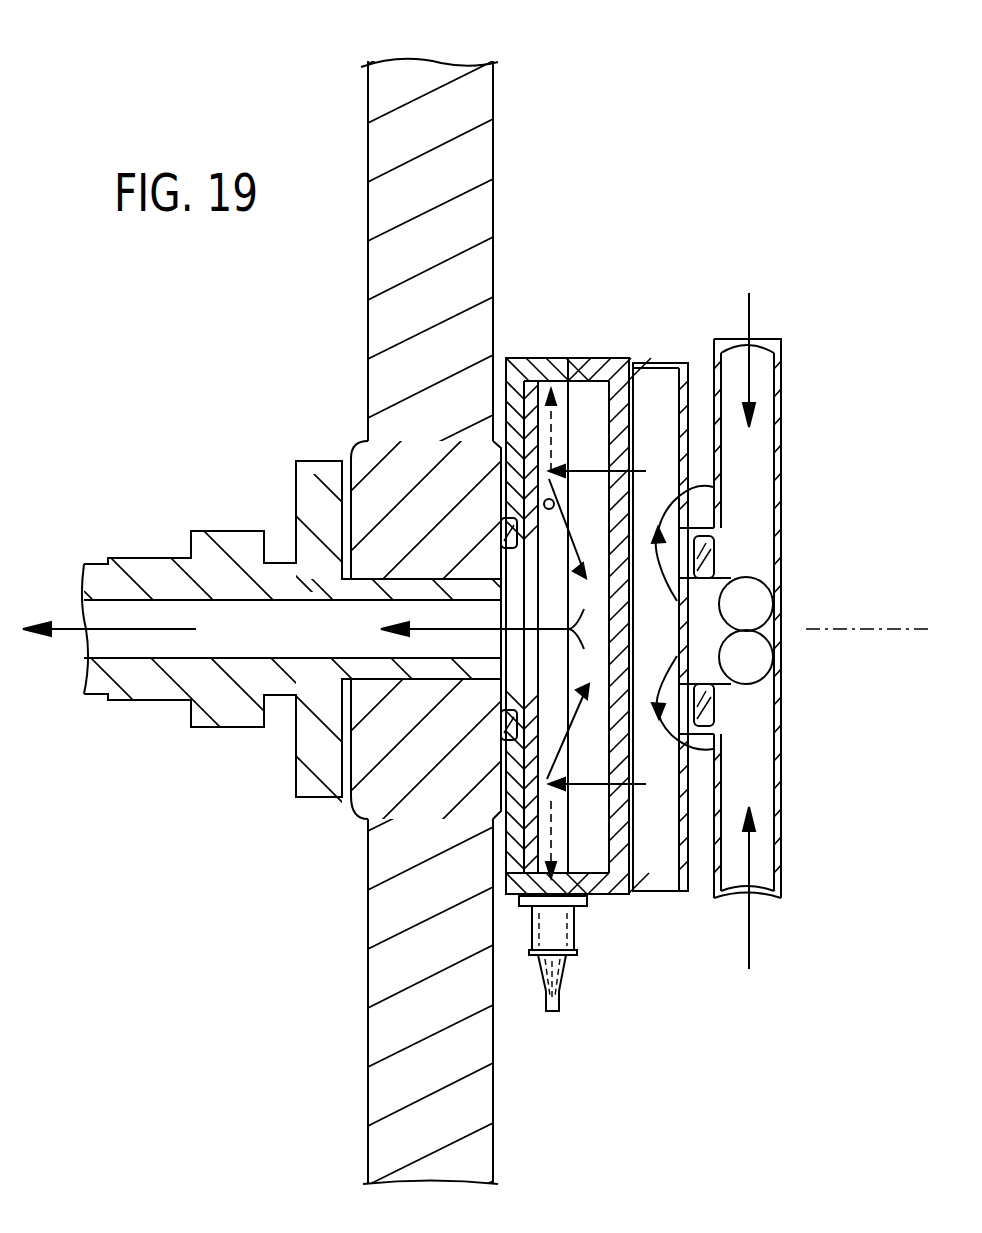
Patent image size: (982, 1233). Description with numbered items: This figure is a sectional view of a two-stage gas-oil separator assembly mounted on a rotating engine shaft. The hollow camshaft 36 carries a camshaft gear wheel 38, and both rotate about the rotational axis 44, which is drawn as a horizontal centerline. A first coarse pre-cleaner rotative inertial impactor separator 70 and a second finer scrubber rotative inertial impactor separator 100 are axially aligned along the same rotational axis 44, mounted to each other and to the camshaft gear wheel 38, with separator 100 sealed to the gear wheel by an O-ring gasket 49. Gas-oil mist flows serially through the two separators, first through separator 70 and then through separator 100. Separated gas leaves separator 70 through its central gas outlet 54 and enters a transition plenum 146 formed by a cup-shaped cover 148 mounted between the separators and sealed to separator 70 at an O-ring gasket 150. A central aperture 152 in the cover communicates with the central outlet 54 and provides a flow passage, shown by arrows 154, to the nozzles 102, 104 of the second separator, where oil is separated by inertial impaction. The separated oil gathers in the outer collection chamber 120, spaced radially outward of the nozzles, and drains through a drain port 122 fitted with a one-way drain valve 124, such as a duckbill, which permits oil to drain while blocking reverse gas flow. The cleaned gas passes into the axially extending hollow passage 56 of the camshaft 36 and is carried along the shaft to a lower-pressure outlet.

The camshaft gear wheel 38 is at (456, 72).
The camshaft 36 is at (150, 555).
The axially extending hollow passage 56 is at (100, 640).
The O-ring gasket 49 is at (500, 522).
The second finer scrubber rotative inertial impactor separator 100 is at (590, 356).
The nozzle 102 is at (625, 457).
The nozzle 104 is at (623, 790).
The outer collection chamber 120 is at (588, 876).
The drain port 122 is at (545, 884).
The one-way drain valve 124 is at (540, 975).
The transition plenum 146 is at (662, 875).
The cup-shaped cover 148 is at (660, 893).
The O-ring gasket 150 is at (711, 550).
The central aperture 152 is at (680, 637).
The arrows 154 is at (693, 492).
The central gas outlet 54 is at (712, 615).
The first coarse pre-cleaner rotative inertial impactor separator 70 is at (783, 436).
The rotational axis 44 is at (858, 640).